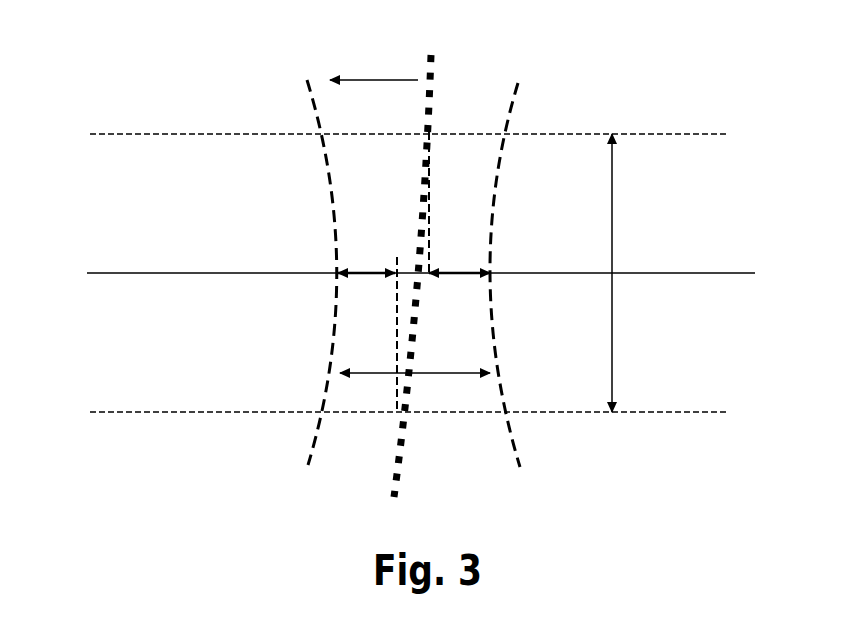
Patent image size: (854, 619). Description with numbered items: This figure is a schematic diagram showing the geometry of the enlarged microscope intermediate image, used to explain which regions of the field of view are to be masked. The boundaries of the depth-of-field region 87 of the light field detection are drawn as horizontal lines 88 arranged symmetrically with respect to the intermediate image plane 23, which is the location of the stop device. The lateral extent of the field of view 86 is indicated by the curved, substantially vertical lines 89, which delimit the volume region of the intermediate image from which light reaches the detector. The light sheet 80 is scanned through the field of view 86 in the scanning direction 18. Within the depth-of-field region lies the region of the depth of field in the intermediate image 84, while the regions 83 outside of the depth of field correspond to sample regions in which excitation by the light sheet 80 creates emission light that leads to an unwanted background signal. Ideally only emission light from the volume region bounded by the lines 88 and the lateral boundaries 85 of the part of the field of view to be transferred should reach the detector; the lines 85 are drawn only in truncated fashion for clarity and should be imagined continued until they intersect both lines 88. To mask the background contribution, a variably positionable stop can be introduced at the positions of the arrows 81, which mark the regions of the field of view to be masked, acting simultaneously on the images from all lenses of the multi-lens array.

The scanning direction 18 is at (374, 67).
The intermediate image plane 23 is at (87, 273).
The light sheet 80 is at (433, 54).
The regions of the field of view to be masked 81 is at (372, 268).
The region outside of the depth of field 83 is at (453, 265).
The region of the depth of field in the intermediate image 84 is at (406, 244).
The lateral boundaries of the part of the field of view to be transferred 85 is at (431, 199).
The lateral extent of the field of view 86 is at (415, 390).
The depth-of-field region 87 is at (630, 273).
The delimitations of the depth-of-field region 88 is at (394, 276).
The lateral boundaries of the field of view 89 is at (422, 279).